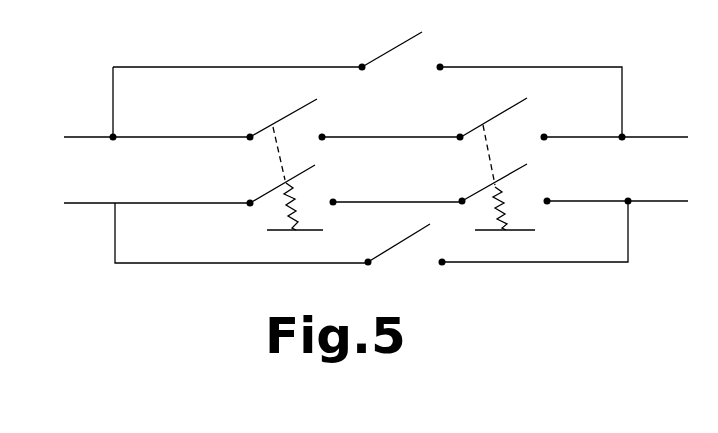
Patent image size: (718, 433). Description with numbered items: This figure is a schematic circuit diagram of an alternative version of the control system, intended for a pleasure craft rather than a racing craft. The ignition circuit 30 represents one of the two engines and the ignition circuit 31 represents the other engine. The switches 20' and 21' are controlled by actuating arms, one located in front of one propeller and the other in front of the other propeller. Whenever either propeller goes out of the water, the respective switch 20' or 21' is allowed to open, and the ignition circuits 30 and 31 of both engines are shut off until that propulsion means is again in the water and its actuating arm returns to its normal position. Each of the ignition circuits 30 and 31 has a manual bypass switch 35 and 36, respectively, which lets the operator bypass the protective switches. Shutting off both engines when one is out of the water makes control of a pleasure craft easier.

The manual bypass switch 35 is at (400, 43).
The manual bypass switch 36 is at (416, 237).
The ignition circuit 30 is at (678, 128).
The ignition circuit 31 is at (678, 195).
The switch 20' is at (299, 164).
The switch 21' is at (509, 164).